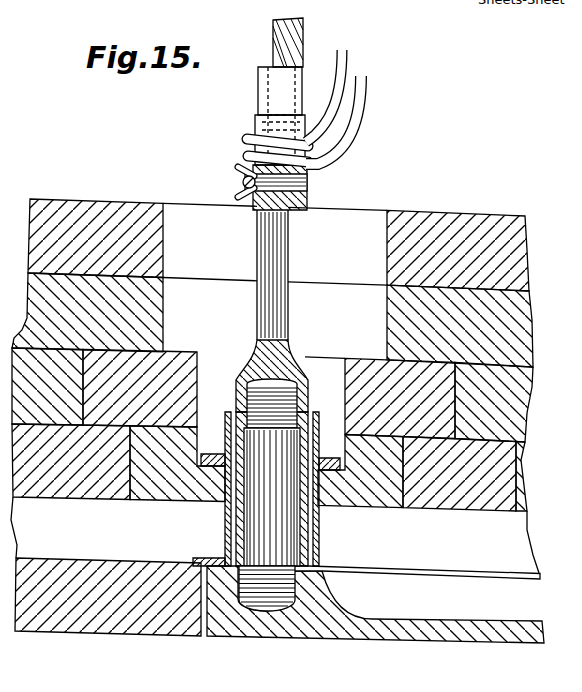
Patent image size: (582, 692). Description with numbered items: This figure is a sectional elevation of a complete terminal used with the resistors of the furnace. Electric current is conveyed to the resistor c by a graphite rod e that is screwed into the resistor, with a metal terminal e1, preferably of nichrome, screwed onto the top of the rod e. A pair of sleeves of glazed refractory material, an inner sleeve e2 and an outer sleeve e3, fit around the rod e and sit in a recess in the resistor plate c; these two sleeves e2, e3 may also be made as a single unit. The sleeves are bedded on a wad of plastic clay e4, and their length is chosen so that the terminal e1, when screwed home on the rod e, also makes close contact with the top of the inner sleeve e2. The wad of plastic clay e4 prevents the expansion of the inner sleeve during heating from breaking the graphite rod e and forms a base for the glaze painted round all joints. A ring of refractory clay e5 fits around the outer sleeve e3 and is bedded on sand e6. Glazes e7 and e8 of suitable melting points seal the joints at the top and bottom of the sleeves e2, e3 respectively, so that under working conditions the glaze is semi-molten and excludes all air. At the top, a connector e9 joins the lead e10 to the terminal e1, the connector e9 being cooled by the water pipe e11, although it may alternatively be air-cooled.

The resistor c is at (354, 638).
The graphite rod e is at (272, 472).
The metal terminal e1 is at (289, 264).
The inner sleeve e2 is at (314, 418).
The outer sleeve e3 is at (312, 444).
The wad of plastic clay e4 is at (301, 578).
The ring of refractory clay e5 is at (216, 426).
The sand e6 is at (336, 467).
The glaze e7 is at (226, 457).
The glaze e8 is at (308, 565).
The connector e9 is at (268, 95).
The lead e10 is at (302, 40).
The water pipe e11 is at (354, 107).